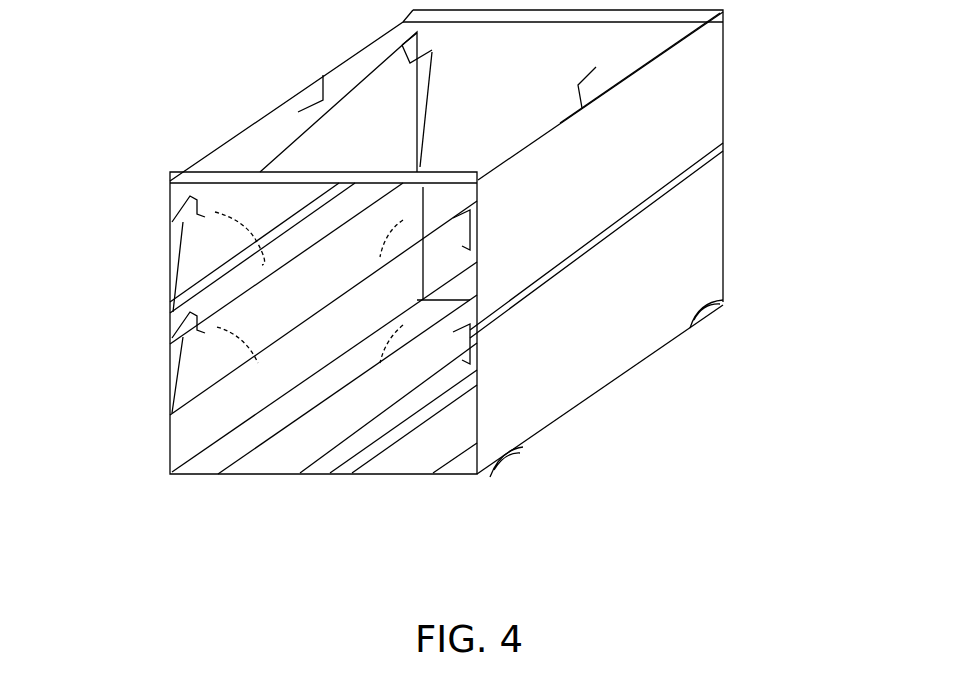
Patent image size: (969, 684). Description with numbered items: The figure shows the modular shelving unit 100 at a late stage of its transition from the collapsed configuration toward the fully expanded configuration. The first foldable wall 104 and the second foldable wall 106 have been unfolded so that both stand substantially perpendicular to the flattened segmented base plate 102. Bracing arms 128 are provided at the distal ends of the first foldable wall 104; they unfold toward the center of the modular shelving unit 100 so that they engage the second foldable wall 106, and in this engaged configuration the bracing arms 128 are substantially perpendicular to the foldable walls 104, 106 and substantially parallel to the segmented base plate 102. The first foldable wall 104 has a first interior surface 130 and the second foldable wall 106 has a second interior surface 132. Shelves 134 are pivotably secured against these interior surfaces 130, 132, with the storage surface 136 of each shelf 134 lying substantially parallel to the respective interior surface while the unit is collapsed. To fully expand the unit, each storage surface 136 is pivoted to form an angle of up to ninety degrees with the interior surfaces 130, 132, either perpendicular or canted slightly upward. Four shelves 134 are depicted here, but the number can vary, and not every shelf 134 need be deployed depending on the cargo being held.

The modular shelving unit 100 is at (752, 411).
The segmented base plate 102 is at (265, 473).
The first foldable wall 104 is at (240, 133).
The second foldable wall 106 is at (603, 193).
The bracing arms 128 is at (453, 172).
The first interior surface 130 is at (323, 77).
The second interior surface 132 is at (596, 67).
The shelves 134 is at (175, 333).
The storage surface 136 is at (273, 305).